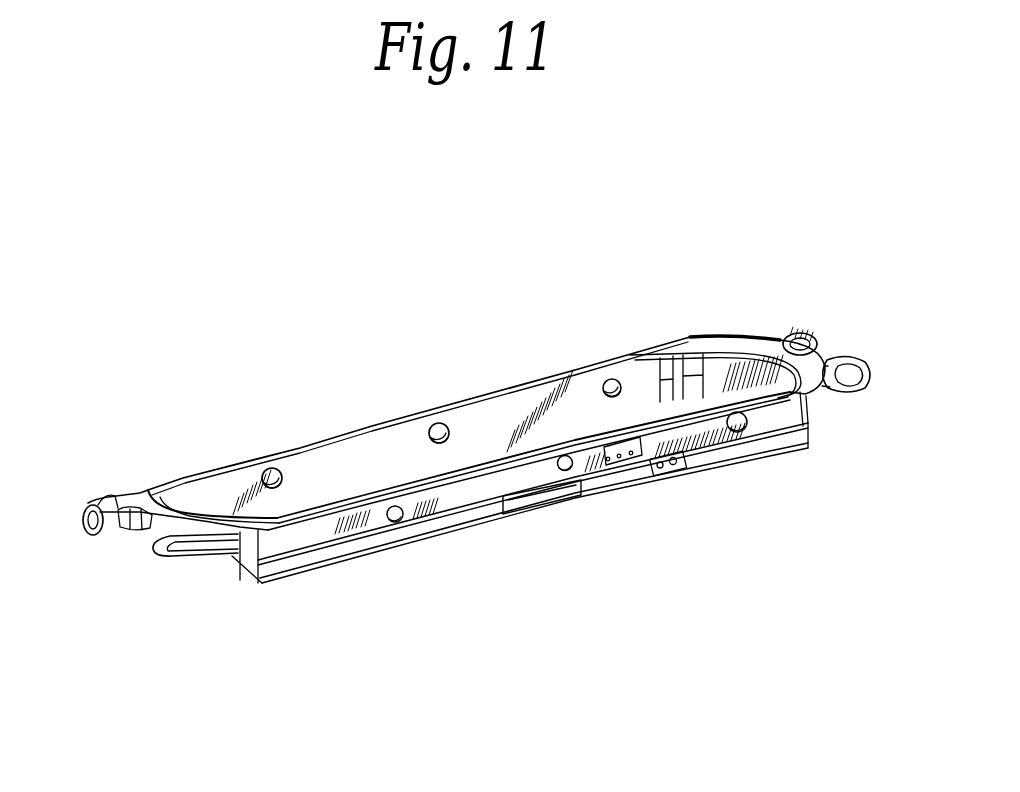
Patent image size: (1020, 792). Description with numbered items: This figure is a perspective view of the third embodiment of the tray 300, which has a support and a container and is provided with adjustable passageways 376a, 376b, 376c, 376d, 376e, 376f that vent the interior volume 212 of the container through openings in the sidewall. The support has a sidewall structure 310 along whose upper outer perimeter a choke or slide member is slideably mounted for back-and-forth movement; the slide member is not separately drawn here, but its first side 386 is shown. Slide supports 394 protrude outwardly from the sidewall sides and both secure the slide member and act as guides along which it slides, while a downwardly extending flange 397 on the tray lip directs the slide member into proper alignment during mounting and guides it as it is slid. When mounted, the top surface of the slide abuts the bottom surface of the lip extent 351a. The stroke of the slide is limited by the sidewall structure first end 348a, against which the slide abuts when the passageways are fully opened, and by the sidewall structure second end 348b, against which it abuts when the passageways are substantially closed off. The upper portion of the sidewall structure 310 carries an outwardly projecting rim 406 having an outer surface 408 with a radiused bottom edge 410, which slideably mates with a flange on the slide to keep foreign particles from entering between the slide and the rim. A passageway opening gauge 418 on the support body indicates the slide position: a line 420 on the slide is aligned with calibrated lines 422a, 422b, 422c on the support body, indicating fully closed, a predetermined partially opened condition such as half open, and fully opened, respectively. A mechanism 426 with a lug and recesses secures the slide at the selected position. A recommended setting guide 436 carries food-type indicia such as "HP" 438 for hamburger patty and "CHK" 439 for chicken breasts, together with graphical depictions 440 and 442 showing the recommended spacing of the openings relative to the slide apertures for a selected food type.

The tray 300 is at (772, 306).
The interior volume 212 is at (480, 418).
The sidewall structure 310 is at (343, 560).
The sidewall structure first end 348a is at (233, 575).
The sidewall structure second end 348b is at (750, 436).
The extent 351a is at (137, 492).
The adjustable passageway 376a is at (400, 522).
The adjustable passageway 376b is at (567, 471).
The adjustable passageway 376c is at (742, 432).
The adjustable passageway 376d is at (273, 468).
The adjustable passageway 376e is at (437, 423).
The adjustable passageway 376f is at (611, 379).
The first side 386 is at (317, 575).
The slide support 394 is at (517, 515).
The downwardly extending flange 397 is at (270, 572).
The outwardly projecting rim 406 is at (802, 412).
The outer surface 408 is at (804, 395).
The radiused bottom edge 410 is at (805, 432).
The passageway opening gauge 418 is at (623, 466).
The line 420 is at (633, 444).
The calibrated line 422a is at (608, 462).
The calibrated line 422b is at (619, 459).
The calibrated line 422c is at (631, 456).
The mechanism 426 is at (640, 447).
The recommended setting guide 436 is at (660, 508).
The indicia "HP" 438 is at (640, 496).
The indicia "CHK" 439 is at (672, 482).
The graphical depiction 440 is at (665, 447).
The graphical depiction 442 is at (680, 462).